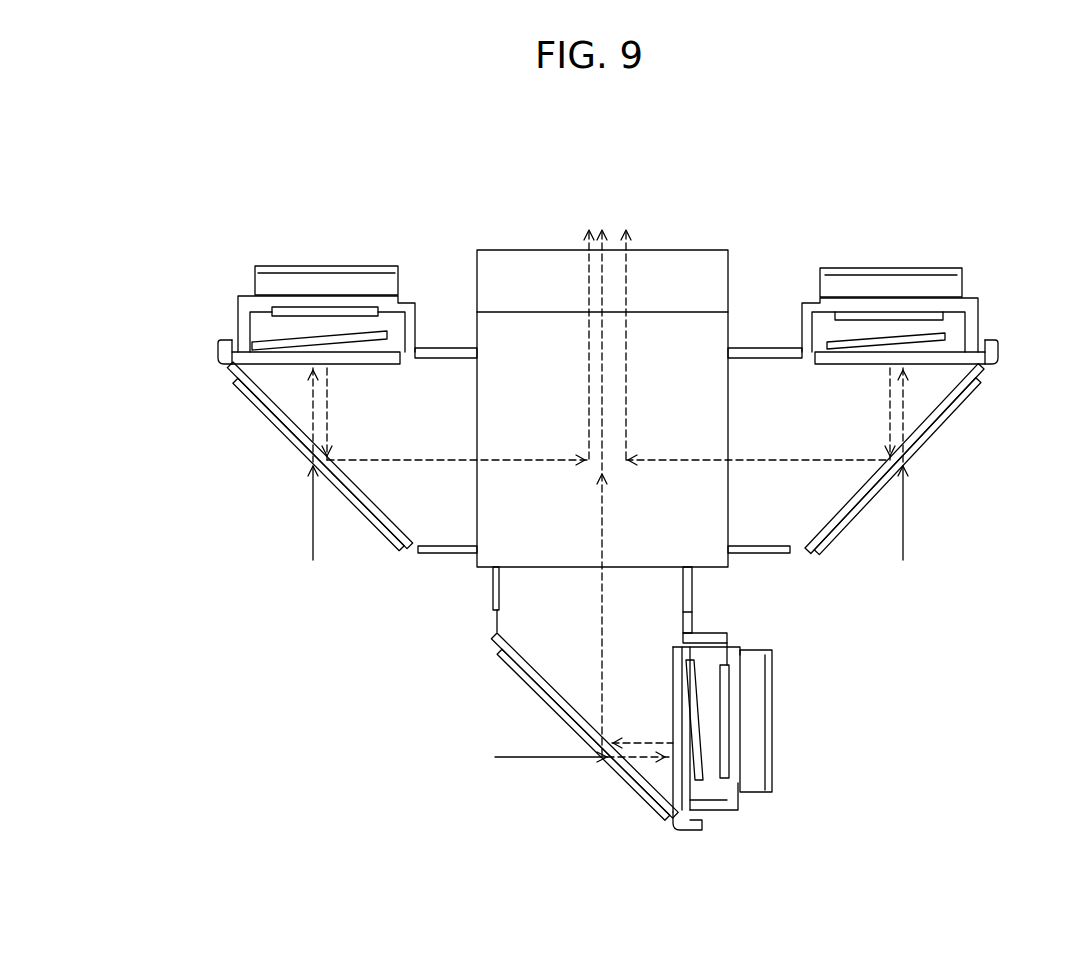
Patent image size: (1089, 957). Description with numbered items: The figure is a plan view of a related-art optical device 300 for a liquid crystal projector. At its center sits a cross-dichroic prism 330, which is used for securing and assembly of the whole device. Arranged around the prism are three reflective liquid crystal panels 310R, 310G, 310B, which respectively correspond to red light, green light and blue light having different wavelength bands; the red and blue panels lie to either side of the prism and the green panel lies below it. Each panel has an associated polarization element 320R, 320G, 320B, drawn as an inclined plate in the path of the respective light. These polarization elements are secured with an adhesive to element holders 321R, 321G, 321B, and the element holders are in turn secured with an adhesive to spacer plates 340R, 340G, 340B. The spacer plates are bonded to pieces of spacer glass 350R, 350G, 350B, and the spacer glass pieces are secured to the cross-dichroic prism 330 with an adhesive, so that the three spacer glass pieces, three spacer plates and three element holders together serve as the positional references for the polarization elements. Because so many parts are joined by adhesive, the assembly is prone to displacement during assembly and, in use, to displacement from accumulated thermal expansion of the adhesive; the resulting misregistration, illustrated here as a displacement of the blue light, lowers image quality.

The optical device 300 is at (716, 164).
The cross-dichroic prism 330 is at (552, 268).
The reflective liquid crystal panel 310R is at (310, 287).
The reflective liquid crystal panel 310G is at (755, 715).
The reflective liquid crystal panel 310B is at (926, 288).
The polarization element 320R is at (270, 418).
The polarization element 320G is at (627, 773).
The polarization element 320B is at (937, 418).
The element holder 321R is at (240, 368).
The element holder 321G is at (672, 812).
The element holder 321B is at (975, 372).
The spacer plate 340R is at (443, 525).
The spacer plate 340G is at (510, 613).
The spacer plate 340B is at (807, 510).
The spacer glass 350R is at (457, 352).
The spacer glass 350G is at (688, 588).
The spacer glass 350B is at (757, 352).